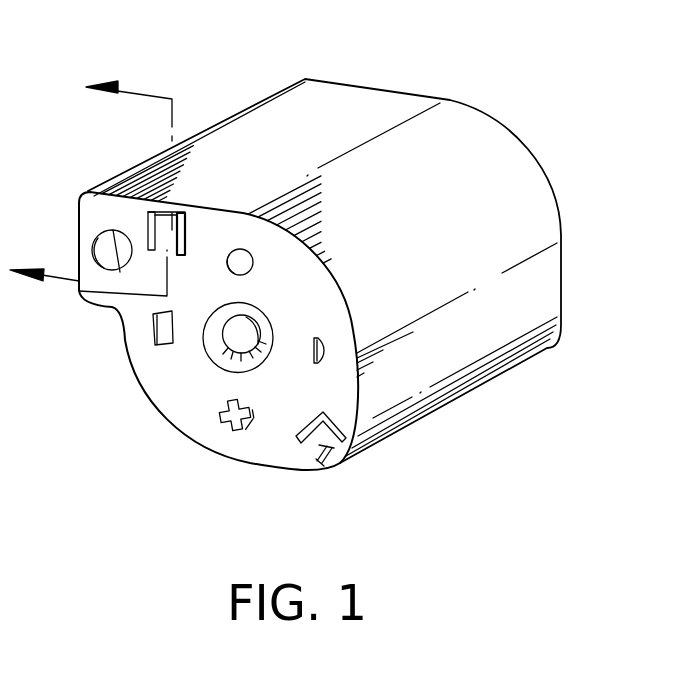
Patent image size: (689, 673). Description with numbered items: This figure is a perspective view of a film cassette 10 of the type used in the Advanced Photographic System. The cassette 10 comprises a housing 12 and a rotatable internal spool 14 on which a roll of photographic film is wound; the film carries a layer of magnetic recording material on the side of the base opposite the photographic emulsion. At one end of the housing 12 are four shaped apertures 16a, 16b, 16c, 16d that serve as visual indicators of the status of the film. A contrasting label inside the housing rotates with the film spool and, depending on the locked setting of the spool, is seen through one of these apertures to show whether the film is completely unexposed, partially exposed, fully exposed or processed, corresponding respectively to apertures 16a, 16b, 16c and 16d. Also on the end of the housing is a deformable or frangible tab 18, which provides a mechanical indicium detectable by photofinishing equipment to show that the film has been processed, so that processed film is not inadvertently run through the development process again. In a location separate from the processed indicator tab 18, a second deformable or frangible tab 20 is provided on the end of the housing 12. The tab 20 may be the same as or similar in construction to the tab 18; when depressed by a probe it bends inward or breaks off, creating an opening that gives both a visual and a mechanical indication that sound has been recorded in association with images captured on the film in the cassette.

The film cassette 10 is at (463, 67).
The housing 12 is at (508, 152).
The rotatable internal spool 14 is at (233, 338).
The shaped aperture 16a is at (240, 251).
The shaped aperture 16b is at (322, 352).
The shaped aperture 16c is at (226, 428).
The shaped aperture 16d is at (153, 333).
The deformable or frangible tab 18 is at (335, 460).
The deformable or frangible tab 20 is at (172, 218).